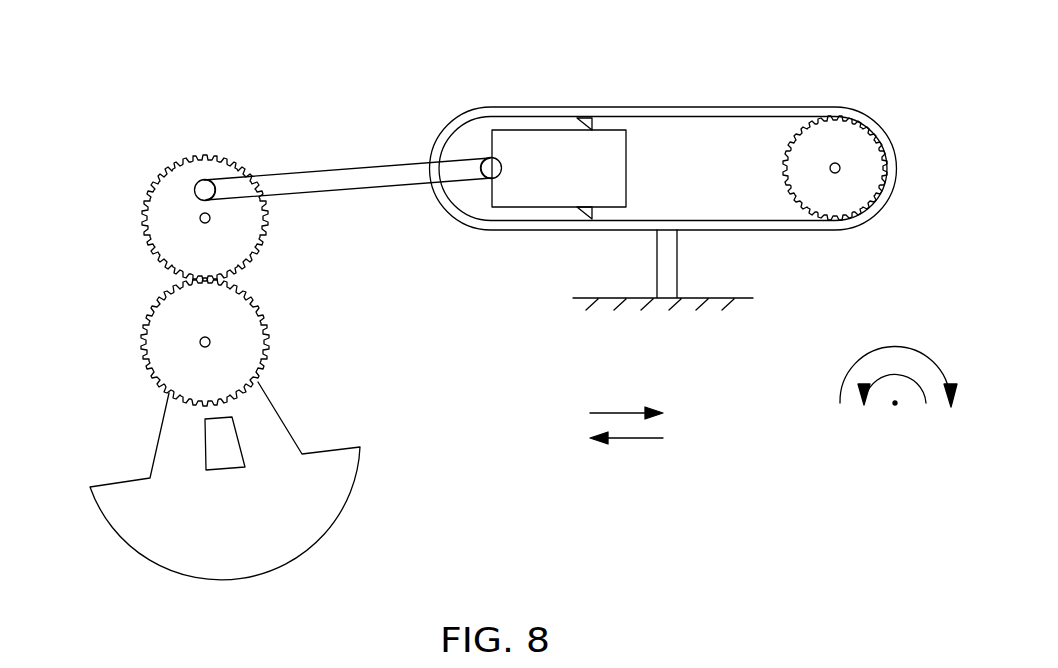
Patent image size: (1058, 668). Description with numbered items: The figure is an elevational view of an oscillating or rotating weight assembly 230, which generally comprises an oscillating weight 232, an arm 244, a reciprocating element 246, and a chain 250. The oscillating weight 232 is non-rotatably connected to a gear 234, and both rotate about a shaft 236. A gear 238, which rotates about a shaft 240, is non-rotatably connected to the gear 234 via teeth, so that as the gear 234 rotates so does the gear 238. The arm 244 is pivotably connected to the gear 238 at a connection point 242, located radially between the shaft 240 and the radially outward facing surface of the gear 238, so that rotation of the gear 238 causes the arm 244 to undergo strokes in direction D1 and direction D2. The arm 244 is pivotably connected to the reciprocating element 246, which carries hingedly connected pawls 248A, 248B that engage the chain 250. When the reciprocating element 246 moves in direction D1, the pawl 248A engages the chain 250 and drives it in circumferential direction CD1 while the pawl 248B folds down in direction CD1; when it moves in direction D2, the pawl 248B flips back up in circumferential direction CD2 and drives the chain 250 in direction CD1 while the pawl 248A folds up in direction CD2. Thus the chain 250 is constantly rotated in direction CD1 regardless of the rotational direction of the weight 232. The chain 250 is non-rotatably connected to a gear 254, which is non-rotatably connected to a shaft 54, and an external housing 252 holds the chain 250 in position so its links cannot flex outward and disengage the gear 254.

The oscillating weight assembly 230 is at (108, 92).
The oscillating weight 232 is at (335, 493).
The gear 234 is at (250, 358).
The shaft 236 is at (200, 343).
The gear 238 is at (165, 238).
The shaft 240 is at (200, 217).
The connection point 242 is at (203, 187).
The arm 244 is at (323, 180).
The reciprocating element 246 is at (482, 130).
The pawl 248A is at (582, 212).
The pawl 248B is at (580, 126).
The chain 250 is at (695, 117).
The external housing 252 is at (778, 107).
The gear 254 is at (867, 143).
The shaft 54 is at (840, 170).
The circumferential direction CD1 is at (922, 387).
The circumferential direction CD2 is at (902, 347).
The direction D1 is at (623, 412).
The direction D2 is at (630, 443).